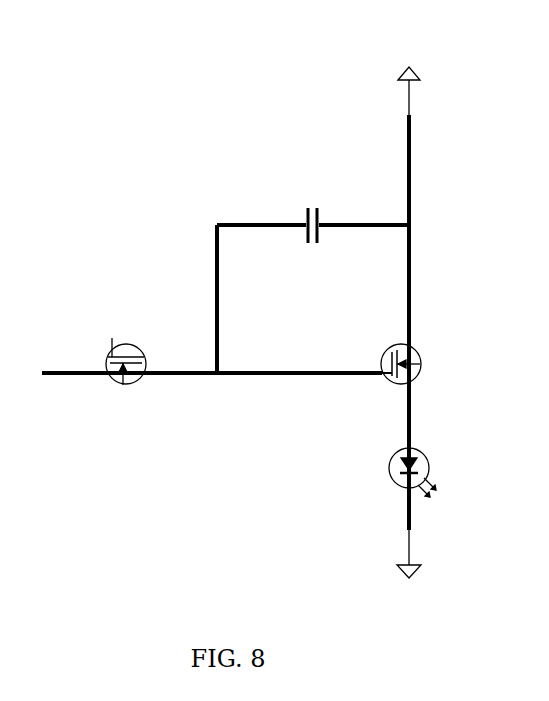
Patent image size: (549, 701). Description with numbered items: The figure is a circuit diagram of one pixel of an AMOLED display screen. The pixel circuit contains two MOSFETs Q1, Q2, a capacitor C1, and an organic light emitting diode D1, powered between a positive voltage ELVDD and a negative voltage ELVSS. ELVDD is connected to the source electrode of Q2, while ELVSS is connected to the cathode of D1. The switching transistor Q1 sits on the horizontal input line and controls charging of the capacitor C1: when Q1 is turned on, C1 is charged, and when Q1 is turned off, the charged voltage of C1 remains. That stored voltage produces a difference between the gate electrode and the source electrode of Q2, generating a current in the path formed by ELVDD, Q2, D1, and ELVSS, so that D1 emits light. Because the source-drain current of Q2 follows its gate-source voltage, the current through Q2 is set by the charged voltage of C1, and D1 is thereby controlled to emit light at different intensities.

The MOSFET Q1 is at (142, 361).
The MOSFET Q2 is at (401, 349).
The capacitor C1 is at (313, 242).
The organic light emitting diode D1 is at (393, 472).
The positive voltage ELVDD is at (409, 132).
The negative voltage ELVSS is at (409, 547).